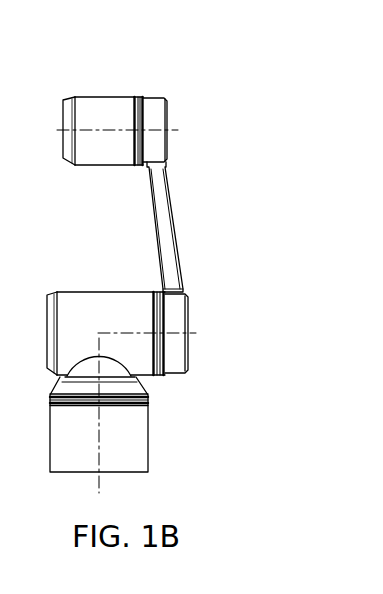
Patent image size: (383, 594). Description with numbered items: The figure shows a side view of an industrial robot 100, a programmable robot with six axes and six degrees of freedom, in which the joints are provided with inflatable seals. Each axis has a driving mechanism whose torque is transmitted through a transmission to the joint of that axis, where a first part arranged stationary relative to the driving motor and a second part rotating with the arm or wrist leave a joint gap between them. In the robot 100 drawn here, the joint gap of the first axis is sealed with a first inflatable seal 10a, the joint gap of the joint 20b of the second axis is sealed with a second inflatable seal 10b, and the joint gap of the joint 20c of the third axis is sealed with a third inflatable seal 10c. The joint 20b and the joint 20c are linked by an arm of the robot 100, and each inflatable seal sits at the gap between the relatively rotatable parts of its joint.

The first inflatable seal 10a is at (144, 402).
The second inflatable seal 10b is at (163, 316).
The third inflatable seal 10c is at (142, 118).
The joint of the second axis 20b is at (165, 330).
The joint of the third axis 20c is at (147, 103).
The industrial robot 100 is at (167, 233).